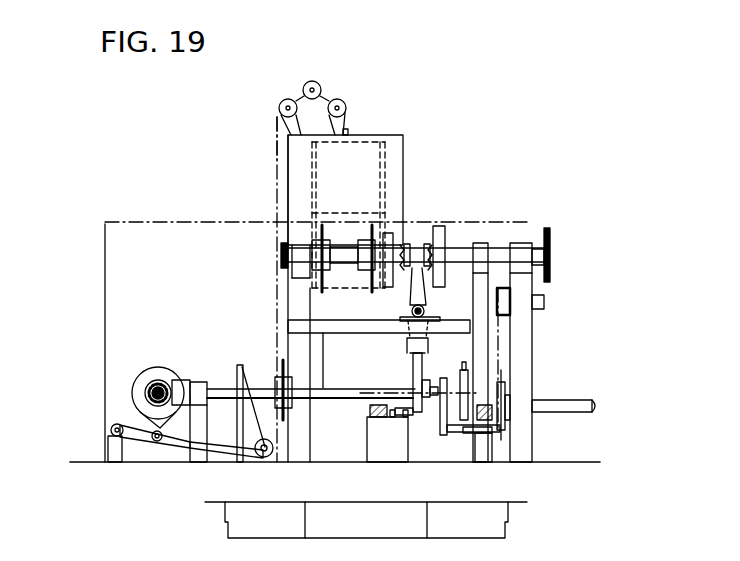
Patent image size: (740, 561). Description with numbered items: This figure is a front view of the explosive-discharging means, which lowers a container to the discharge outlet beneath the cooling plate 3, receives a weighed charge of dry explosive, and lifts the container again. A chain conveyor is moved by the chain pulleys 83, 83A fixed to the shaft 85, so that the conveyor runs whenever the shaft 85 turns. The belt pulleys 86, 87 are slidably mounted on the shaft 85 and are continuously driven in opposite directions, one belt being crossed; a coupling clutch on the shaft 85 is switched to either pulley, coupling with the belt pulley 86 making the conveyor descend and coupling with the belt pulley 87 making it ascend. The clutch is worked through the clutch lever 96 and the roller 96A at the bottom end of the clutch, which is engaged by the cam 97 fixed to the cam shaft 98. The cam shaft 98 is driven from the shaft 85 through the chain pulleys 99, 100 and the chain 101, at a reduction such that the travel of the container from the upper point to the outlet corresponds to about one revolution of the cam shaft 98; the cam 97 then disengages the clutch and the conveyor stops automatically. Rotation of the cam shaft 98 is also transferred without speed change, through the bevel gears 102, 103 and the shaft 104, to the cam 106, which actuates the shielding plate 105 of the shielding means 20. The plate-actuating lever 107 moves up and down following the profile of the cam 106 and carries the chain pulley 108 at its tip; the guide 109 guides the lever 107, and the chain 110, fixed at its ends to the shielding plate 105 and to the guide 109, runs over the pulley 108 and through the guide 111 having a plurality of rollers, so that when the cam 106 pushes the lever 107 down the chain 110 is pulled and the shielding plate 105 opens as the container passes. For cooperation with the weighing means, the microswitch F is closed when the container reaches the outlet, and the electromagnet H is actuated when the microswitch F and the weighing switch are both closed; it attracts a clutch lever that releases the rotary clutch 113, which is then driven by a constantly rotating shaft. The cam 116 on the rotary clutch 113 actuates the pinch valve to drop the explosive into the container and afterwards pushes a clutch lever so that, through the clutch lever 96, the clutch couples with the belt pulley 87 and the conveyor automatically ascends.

The cooling plate 3 is at (400, 527).
The shielding means 20 is at (392, 165).
The chain pulley 83 is at (322, 225).
The chain pulley 83A is at (374, 225).
The shaft 85 is at (313, 243).
The belt pulley 86 is at (417, 250).
The belt pulley 87 is at (452, 226).
The clutch lever 96 is at (422, 296).
The roller 96A is at (418, 368).
The cam 97 is at (422, 370).
The cam shaft 98 is at (342, 395).
The chain pulley 99 is at (280, 253).
The chain pulley 100 is at (291, 463).
The chain 101 is at (282, 293).
The bevel gear 102 is at (177, 380).
The bevel gear 103 is at (157, 372).
The shaft 104 is at (143, 398).
The shielding plate 105 is at (358, 157).
The cam 106 is at (137, 377).
The plate-actuating lever 107 is at (150, 437).
The chain pulley 108 is at (263, 457).
The guide 109 is at (240, 430).
The chain 110 is at (275, 132).
The guide 111 is at (318, 100).
The rotary clutch 113 is at (450, 420).
The cam 116 is at (447, 420).
The microswitch F is at (377, 418).
The electromagnet H is at (492, 428).